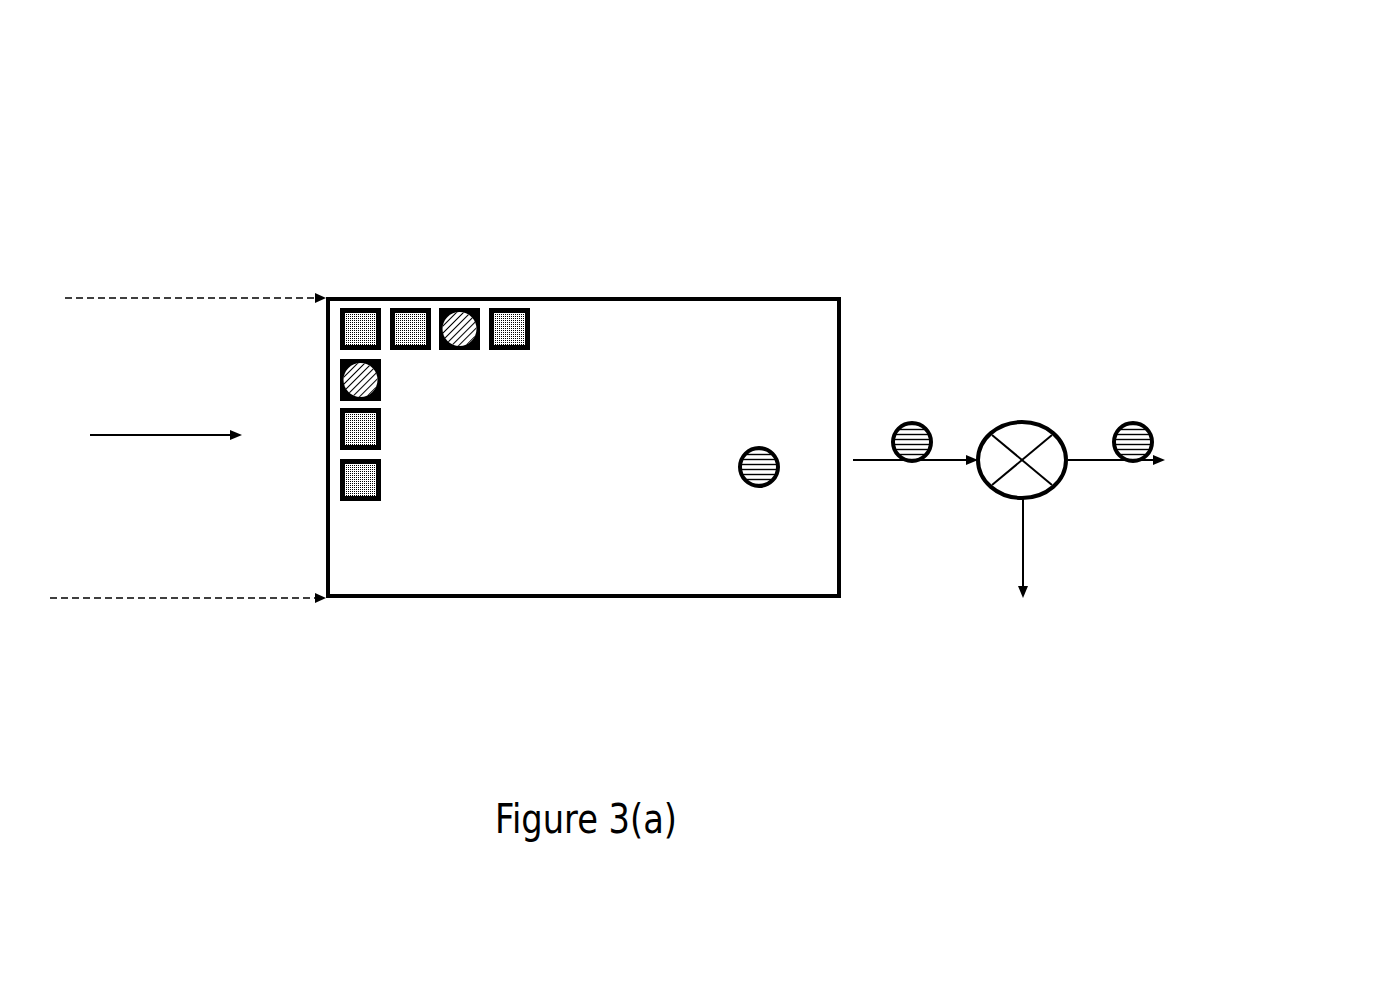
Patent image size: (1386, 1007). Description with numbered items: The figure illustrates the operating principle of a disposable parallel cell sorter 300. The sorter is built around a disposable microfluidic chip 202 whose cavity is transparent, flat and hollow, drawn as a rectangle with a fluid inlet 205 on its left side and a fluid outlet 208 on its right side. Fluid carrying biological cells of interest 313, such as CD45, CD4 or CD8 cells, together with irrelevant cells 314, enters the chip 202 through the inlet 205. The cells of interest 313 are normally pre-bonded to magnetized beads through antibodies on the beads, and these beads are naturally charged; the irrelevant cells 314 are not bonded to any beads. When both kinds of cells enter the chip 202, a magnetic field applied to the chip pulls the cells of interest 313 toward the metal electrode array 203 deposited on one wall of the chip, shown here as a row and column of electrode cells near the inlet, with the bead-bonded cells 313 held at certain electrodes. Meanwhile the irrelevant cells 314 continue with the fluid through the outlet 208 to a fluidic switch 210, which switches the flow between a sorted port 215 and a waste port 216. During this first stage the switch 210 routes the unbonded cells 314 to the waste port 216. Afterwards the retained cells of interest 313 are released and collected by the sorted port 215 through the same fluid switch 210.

The disposable parallel cell sorter 300 is at (250, 178).
The microfluidic chip 202 is at (617, 610).
The metal electrode array 203 is at (505, 348).
The biological cells of interest 313 is at (455, 350).
The irrelevant cells 314 is at (730, 462).
The fluid inlet 205 is at (205, 435).
The fluid outlet 208 is at (940, 473).
The fluidic switch 210 is at (1053, 410).
The sorted port 215 is at (1040, 548).
The waste port 216 is at (1103, 472).